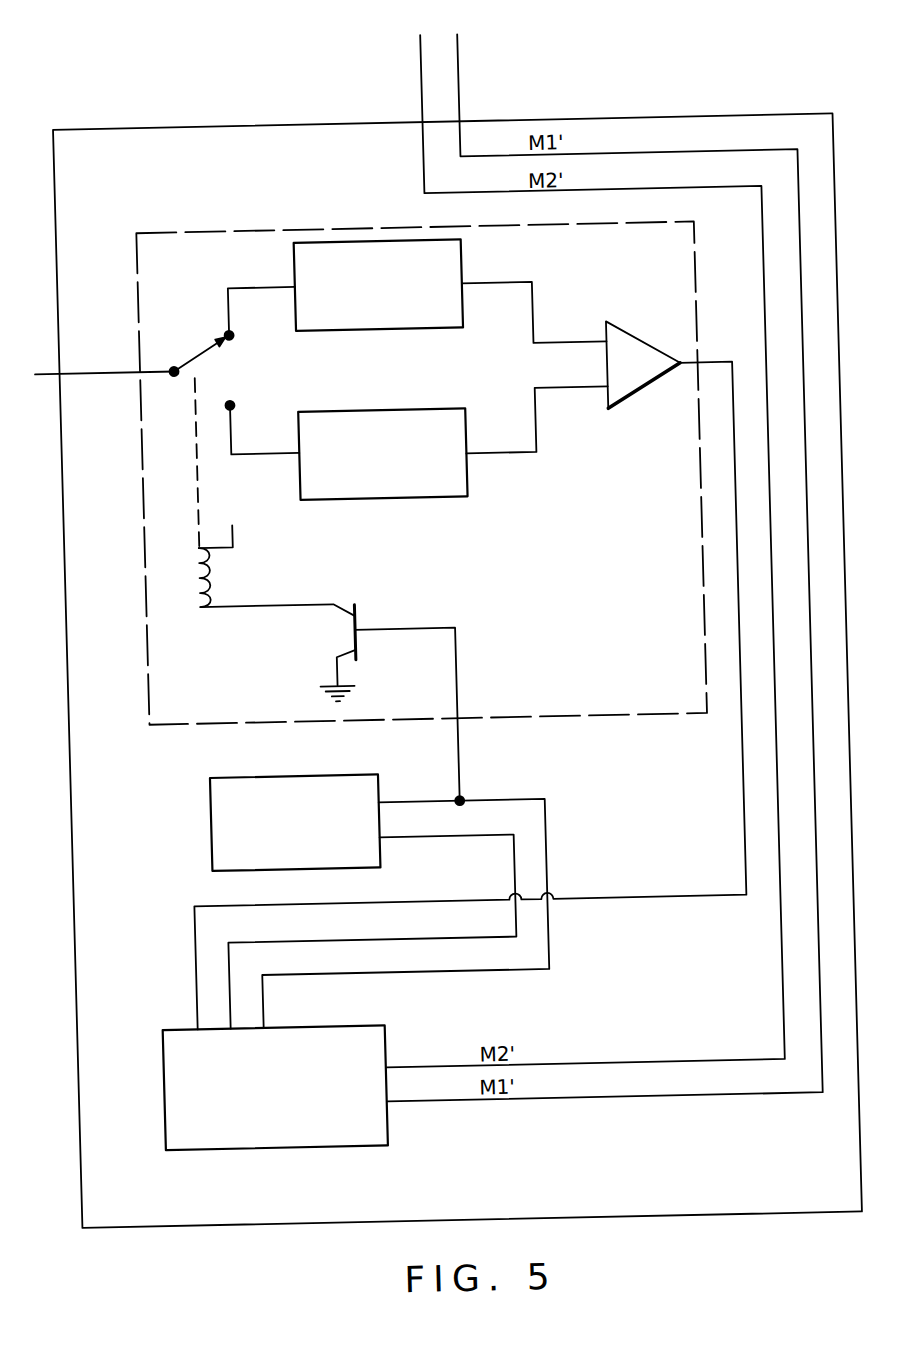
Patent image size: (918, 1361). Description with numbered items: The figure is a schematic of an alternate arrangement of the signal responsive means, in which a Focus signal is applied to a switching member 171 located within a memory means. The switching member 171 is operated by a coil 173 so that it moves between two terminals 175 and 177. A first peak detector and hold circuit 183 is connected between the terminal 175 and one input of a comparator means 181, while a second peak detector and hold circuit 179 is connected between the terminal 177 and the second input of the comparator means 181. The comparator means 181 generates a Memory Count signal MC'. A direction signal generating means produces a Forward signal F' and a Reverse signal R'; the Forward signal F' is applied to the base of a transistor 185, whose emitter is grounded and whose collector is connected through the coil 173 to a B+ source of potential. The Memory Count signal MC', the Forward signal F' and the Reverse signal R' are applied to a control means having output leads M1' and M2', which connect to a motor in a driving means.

The switching member 171 is at (195, 359).
The coil 173 is at (190, 586).
The terminal 175 is at (223, 343).
The terminal 177 is at (222, 408).
The second peak detector and hold circuit 179 is at (389, 420).
The comparator means 181 is at (618, 346).
The first peak detector and hold circuit 183 is at (399, 337).
The transistor 185 is at (336, 643).